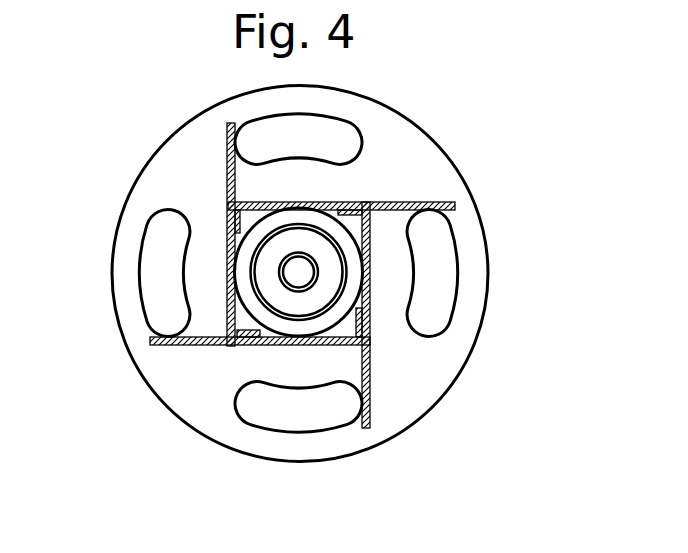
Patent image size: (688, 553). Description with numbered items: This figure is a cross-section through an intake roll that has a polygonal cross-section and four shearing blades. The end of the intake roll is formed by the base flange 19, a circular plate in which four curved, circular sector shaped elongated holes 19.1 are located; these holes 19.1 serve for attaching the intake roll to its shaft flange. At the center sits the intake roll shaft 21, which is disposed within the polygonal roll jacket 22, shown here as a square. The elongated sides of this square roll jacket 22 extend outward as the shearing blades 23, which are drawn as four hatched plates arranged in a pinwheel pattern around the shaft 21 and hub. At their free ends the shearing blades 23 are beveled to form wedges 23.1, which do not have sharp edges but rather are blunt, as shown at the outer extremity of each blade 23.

The base flange 19 is at (197, 197).
The elongated holes 19.1 is at (343, 132).
The intake roll shaft 21 is at (312, 257).
The roll jacket 22 is at (305, 202).
The shearing blades 23 is at (313, 276).
The wedges 23.1 is at (230, 122).